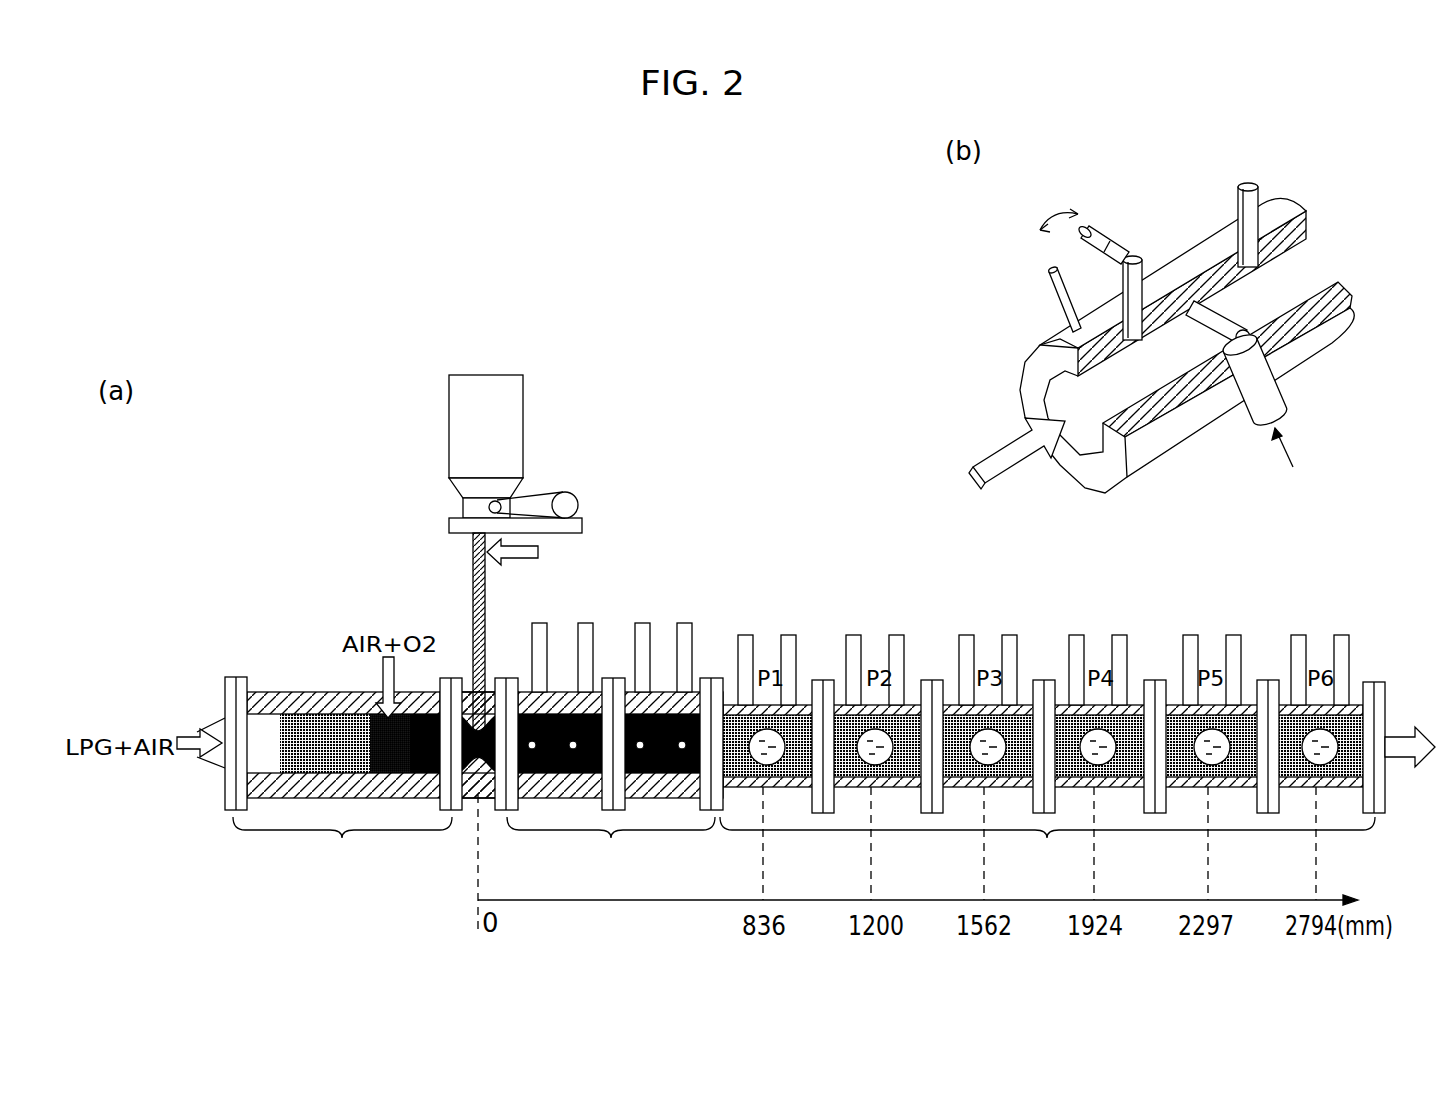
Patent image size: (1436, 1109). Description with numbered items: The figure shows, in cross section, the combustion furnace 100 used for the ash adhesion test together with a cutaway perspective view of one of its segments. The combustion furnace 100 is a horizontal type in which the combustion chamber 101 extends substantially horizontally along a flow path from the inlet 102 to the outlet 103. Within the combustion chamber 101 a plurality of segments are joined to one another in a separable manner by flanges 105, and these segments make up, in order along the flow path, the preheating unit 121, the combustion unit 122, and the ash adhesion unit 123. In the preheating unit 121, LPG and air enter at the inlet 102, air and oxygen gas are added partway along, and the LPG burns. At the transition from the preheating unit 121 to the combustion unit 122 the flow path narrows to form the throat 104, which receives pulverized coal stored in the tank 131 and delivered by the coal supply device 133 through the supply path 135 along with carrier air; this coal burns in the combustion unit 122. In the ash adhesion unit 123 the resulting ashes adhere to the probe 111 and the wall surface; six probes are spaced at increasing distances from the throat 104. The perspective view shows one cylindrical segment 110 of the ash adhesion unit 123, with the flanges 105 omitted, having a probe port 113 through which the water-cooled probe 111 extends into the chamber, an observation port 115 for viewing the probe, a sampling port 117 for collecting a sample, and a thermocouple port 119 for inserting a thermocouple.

The combustion furnace 100 is at (245, 555).
The combustion chamber 101 is at (312, 692).
The inlet 102 is at (222, 770).
The outlet 103 is at (1388, 806).
The throat 104 is at (457, 676).
The flanges 105 is at (1267, 679).
The segment 110 is at (1172, 490).
The probe 111 is at (1312, 277).
The probe port 113 is at (1152, 264).
The observation port 115 is at (1290, 401).
The sampling port 117 is at (1307, 635).
The thermocouple port 119 is at (1053, 287).
The preheating unit 121 is at (342, 846).
The combustion unit 122 is at (611, 847).
The ash adhesion unit 123 is at (1047, 847).
The tank 131 is at (449, 405).
The coal supply device 133 is at (535, 480).
The supply path 135 is at (473, 562).